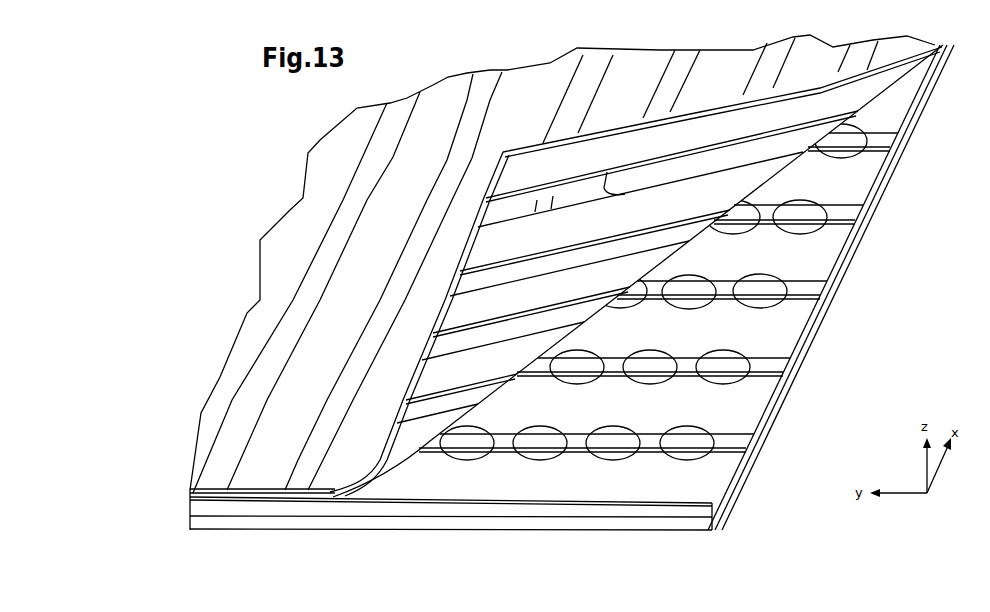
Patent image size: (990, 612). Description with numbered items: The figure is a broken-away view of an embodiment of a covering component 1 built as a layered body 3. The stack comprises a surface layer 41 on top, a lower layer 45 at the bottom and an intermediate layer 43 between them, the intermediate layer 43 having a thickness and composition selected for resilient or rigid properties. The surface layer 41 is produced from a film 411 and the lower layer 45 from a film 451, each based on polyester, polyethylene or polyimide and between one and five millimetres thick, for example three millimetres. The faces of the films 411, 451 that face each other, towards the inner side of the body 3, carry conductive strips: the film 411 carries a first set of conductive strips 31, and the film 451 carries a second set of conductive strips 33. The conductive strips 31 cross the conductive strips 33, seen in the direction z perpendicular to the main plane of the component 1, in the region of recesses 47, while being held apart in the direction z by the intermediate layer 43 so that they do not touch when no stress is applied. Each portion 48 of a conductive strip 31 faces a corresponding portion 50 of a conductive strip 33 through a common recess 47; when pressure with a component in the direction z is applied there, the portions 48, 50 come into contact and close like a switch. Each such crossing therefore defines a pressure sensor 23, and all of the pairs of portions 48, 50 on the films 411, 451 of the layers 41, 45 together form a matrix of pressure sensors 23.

The component 1 is at (562, 262).
The body 3 is at (272, 427).
The surface layer 41 is at (533, 143).
The film 411 is at (356, 327).
The portion of the conductive strip 48 is at (547, 212).
The conductive strips 31 is at (565, 318).
The conductive strips 33 is at (818, 297).
The recesses 47 is at (663, 353).
The portion of the conductive strip 50 is at (713, 263).
The pressure sensor 23 is at (637, 413).
The intermediate layer 43 is at (718, 505).
The film 451 is at (603, 457).
The lower layer 45 is at (697, 525).